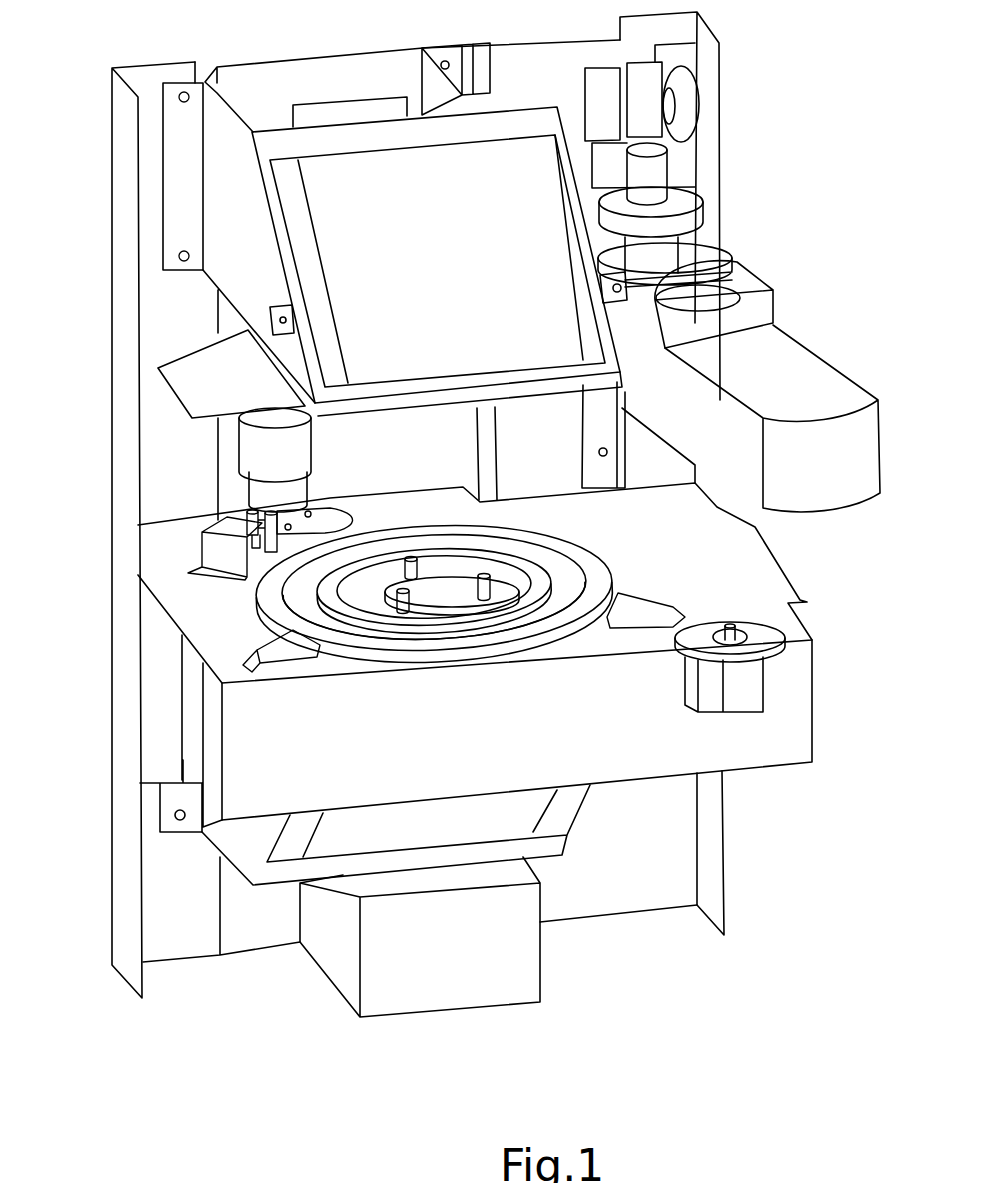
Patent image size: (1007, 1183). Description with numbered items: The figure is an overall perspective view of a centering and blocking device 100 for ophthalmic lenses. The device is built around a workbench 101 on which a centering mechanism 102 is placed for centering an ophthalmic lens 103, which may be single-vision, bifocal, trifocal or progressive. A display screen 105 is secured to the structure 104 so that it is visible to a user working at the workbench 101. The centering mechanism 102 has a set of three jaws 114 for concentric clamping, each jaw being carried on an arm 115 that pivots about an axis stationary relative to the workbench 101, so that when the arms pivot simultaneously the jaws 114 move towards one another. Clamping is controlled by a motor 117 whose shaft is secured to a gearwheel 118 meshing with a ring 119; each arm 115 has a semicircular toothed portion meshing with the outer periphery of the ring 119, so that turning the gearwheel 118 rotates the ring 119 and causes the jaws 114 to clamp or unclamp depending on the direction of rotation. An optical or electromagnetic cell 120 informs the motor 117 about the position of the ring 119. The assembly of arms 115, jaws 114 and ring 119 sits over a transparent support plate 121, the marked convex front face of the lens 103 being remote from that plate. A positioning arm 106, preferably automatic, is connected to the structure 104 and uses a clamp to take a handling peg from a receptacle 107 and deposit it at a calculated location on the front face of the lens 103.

The centering and blocking device 100 is at (777, 157).
The workbench 101 is at (767, 578).
The centering mechanism 102 is at (555, 532).
The ophthalmic lens 103 is at (432, 606).
The structure 104 is at (162, 312).
The display screen 105 is at (363, 173).
The positioning arm 106 is at (787, 372).
The receptacle 107 is at (777, 632).
The jaws 114 is at (430, 590).
The arms 115 is at (578, 556).
The motor 117 is at (258, 452).
The gearwheel 118 is at (347, 523).
The ring 119 is at (600, 583).
The optical or electromagnetic cell 120 is at (247, 523).
The transparent support plate 121 is at (572, 652).